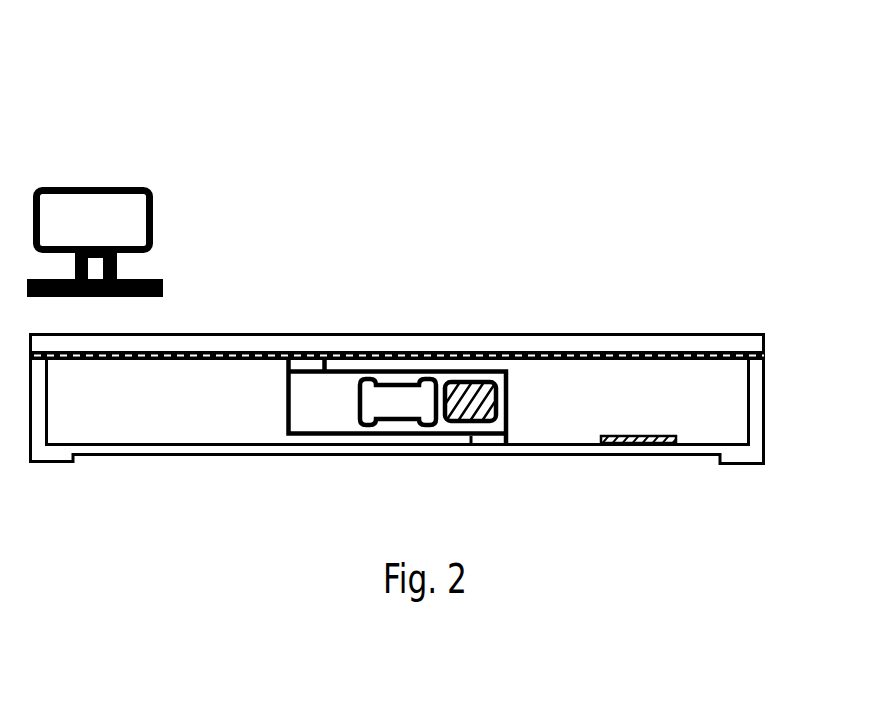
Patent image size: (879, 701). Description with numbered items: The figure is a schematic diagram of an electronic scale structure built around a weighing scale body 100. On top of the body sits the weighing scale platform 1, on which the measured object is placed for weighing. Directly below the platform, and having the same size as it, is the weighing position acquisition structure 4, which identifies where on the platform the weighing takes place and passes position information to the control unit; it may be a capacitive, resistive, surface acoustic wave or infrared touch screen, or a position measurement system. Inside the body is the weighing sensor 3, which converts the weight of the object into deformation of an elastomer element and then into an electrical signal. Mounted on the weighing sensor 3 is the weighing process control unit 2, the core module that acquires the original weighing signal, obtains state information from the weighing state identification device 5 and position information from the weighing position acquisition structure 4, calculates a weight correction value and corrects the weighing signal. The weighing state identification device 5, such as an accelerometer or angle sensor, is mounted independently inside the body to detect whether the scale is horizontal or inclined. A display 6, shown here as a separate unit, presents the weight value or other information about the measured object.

The weighing scale body 100 is at (85, 78).
The weighing scale platform 1 is at (631, 348).
The weighing process control unit 2 is at (472, 424).
The weighing sensor 3 is at (342, 393).
The weighing position acquisition structure 4 is at (738, 358).
The weighing state identification device 5 is at (640, 442).
The display 6 is at (153, 206).